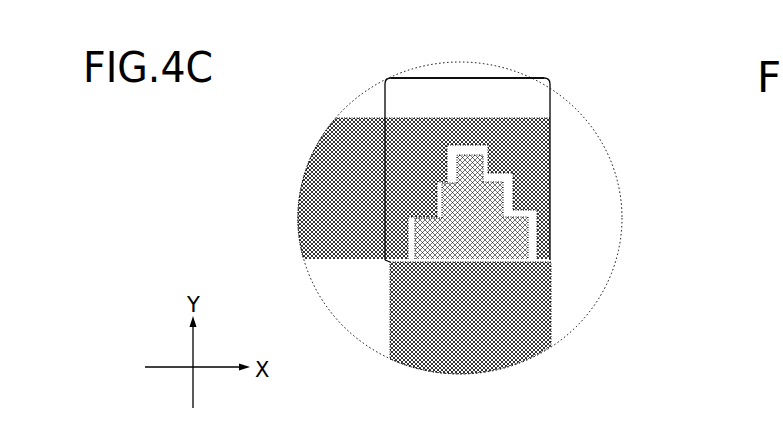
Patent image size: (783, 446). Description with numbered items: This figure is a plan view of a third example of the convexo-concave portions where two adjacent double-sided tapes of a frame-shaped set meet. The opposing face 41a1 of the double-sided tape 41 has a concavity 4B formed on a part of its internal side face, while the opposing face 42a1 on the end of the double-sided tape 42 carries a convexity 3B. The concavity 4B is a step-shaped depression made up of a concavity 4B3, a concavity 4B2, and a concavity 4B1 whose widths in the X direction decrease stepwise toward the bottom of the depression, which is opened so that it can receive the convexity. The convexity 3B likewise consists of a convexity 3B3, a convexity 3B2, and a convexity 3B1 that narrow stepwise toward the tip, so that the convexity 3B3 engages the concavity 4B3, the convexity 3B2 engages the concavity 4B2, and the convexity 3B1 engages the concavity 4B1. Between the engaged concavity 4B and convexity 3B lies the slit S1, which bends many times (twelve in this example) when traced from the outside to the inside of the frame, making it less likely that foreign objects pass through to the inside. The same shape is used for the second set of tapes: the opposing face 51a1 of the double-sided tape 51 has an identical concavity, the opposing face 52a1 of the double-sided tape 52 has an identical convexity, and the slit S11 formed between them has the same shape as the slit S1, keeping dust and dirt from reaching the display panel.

The double-sided tape 41 is at (347, 169).
The double-sided tape 51 is at (318, 245).
The opposing face 41a1 is at (467, 41).
The opposing face 51a1 is at (495, 78).
The concavity 4B is at (371, 175).
The concavity 4B1 is at (446, 172).
The concavity 4B2 is at (431, 204).
The concavity 4B3 is at (408, 241).
The convexity 3B is at (591, 252).
The convexity 3B1 is at (475, 170).
The convexity 3B2 is at (485, 203).
The convexity 3B3 is at (480, 245).
The double-sided tape 42 is at (414, 339).
The double-sided tape 52 is at (414, 339).
The opposing face 42a1 is at (470, 318).
The opposing face 52a1 is at (470, 318).
The slit S1 is at (316, 300).
The slit S11 is at (378, 263).